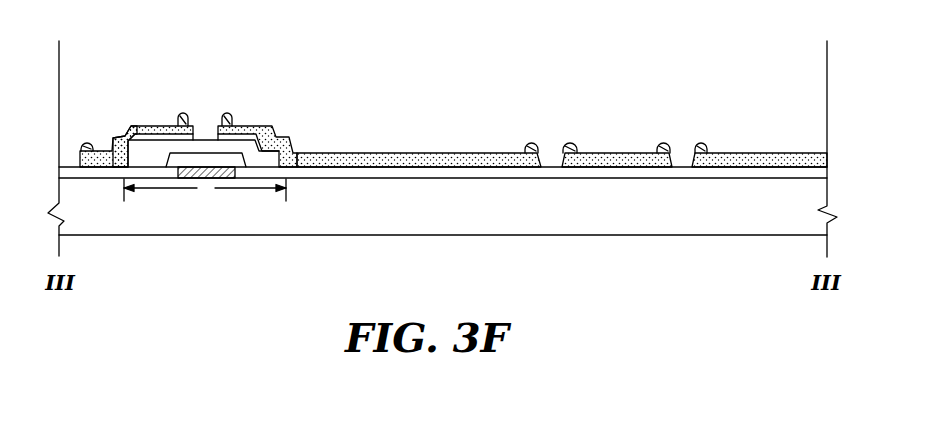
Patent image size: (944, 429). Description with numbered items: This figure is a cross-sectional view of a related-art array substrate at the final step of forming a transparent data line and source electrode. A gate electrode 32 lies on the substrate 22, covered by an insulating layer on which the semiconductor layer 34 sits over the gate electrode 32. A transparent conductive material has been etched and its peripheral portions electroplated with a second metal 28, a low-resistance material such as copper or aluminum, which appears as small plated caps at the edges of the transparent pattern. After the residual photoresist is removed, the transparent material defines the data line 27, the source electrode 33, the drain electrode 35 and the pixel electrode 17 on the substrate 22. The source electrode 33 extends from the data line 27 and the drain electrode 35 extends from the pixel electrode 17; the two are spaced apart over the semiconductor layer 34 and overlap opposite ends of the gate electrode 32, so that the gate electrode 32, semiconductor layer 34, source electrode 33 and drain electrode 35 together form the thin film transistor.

The pixel electrode 17 is at (452, 153).
The substrate 22 is at (442, 217).
The data line 27 is at (108, 157).
The second metal 28 is at (88, 145).
The gate electrode 32 is at (222, 178).
The source electrode 33 is at (128, 137).
The semiconductor layer 34 is at (205, 128).
The drain electrode 35 is at (281, 137).